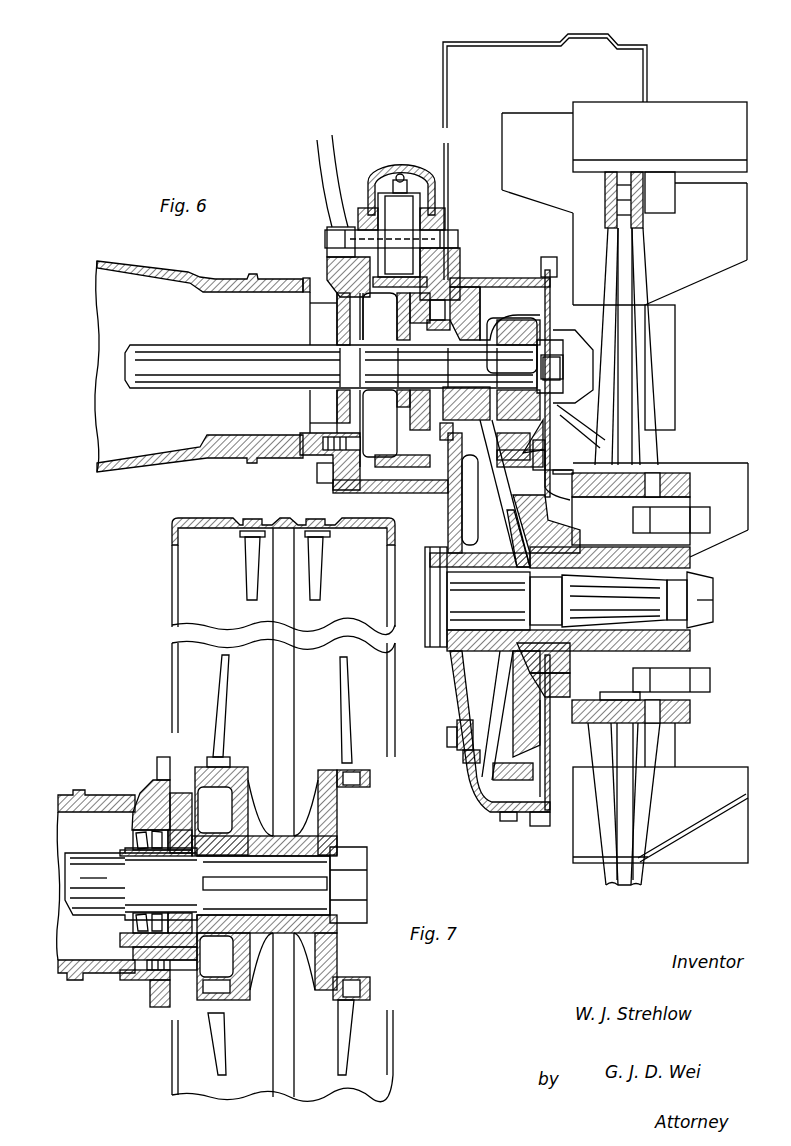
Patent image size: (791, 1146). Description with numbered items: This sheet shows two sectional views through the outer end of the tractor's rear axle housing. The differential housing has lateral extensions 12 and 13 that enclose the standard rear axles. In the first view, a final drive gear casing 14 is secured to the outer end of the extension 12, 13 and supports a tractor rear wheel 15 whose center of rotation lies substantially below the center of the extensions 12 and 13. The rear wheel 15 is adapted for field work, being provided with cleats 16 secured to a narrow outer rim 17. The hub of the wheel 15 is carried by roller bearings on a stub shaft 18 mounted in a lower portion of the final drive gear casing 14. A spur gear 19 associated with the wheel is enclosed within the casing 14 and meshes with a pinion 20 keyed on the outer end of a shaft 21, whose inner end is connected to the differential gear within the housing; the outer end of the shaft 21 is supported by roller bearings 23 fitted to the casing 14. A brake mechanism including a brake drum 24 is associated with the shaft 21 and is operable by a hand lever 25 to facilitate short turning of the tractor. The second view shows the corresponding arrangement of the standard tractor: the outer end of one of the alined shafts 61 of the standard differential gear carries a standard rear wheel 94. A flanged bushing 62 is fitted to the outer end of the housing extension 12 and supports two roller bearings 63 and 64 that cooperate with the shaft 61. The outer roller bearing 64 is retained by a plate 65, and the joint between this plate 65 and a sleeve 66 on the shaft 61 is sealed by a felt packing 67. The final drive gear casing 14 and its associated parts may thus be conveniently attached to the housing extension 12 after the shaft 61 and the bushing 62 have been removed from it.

In FIG. 7, the lateral extension 12 is at (88, 798).
In FIG. 6, the lateral extension 13 is at (190, 277).
In FIG. 6, the final drive gear casing 14 is at (458, 696).
In FIG. 6, the tractor rear wheel 15 is at (694, 710).
In FIG. 6, the cleats 16 is at (704, 272).
In FIG. 6, the narrow outer rim 17 is at (638, 228).
In FIG. 6, the stub shaft 18 is at (600, 580).
In FIG. 6, the spur gear 19 is at (540, 448).
In FIG. 6, the pinion 20 is at (520, 320).
In FIG. 6, the shaft 21 is at (216, 388).
In FIG. 6, the roller bearings 23 is at (480, 320).
In FIG. 6, the brake drum 24 is at (388, 282).
In FIG. 6, the hand lever 25 is at (322, 160).
In FIG. 7, the shaft 61 is at (91, 853).
In FIG. 7, the flanged bushing 62 is at (183, 788).
In FIG. 7, the roller bearing 63 is at (122, 938).
In FIG. 7, the outer roller bearing 64 is at (197, 945).
In FIG. 7, the plate 65 is at (190, 835).
In FIG. 7, the sleeve 66 is at (197, 930).
In FIG. 7, the felt packing 67 is at (195, 850).
In FIG. 7, the standard rear wheel 94 is at (210, 528).